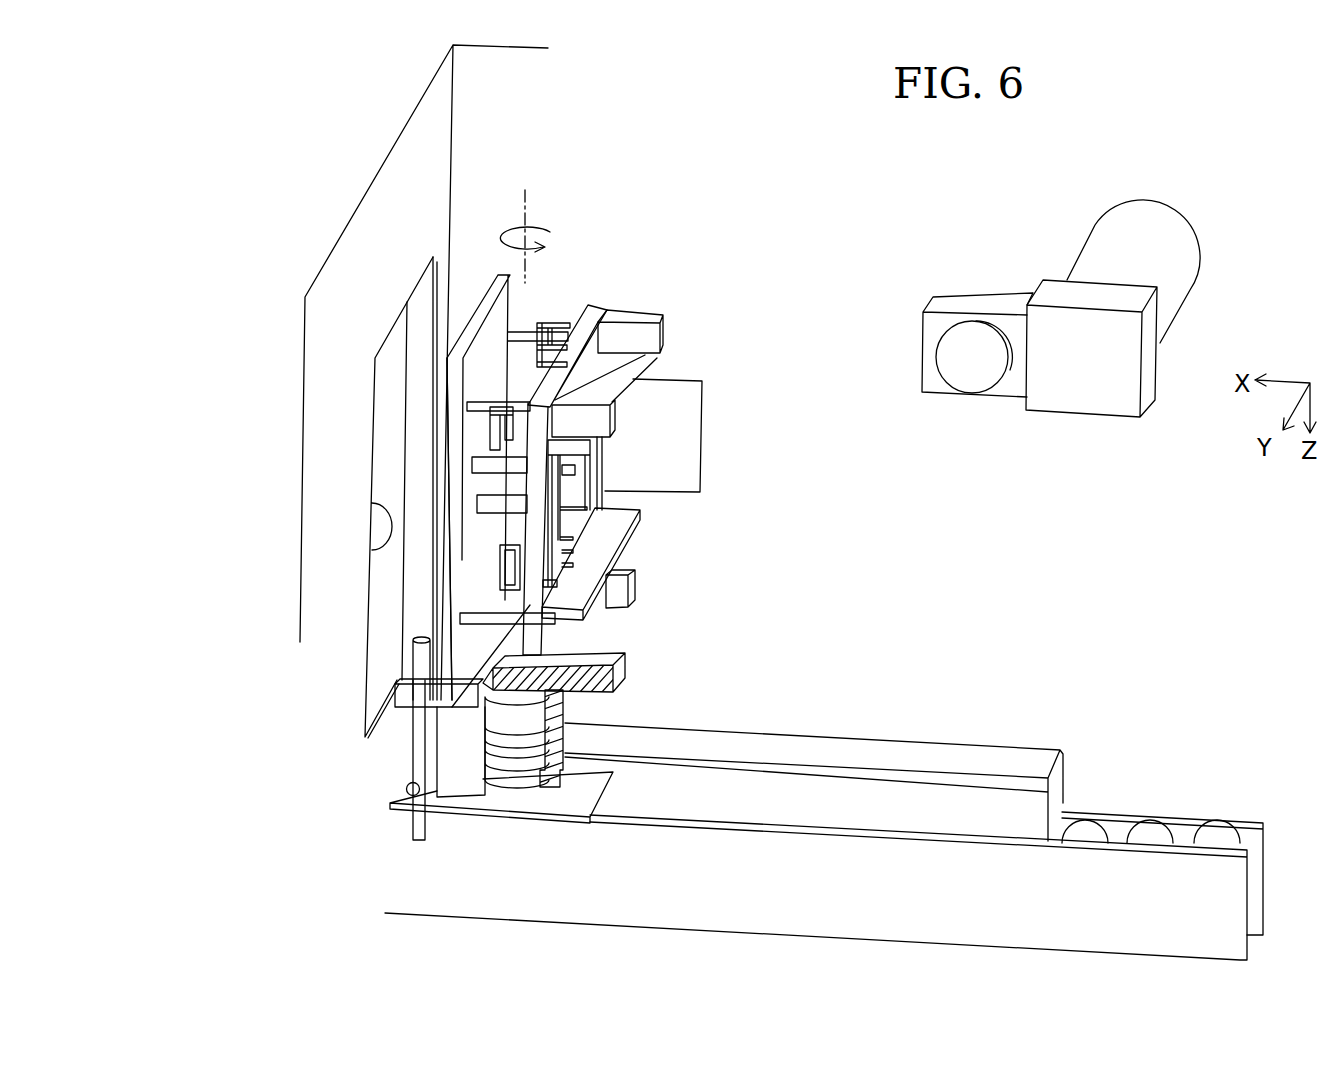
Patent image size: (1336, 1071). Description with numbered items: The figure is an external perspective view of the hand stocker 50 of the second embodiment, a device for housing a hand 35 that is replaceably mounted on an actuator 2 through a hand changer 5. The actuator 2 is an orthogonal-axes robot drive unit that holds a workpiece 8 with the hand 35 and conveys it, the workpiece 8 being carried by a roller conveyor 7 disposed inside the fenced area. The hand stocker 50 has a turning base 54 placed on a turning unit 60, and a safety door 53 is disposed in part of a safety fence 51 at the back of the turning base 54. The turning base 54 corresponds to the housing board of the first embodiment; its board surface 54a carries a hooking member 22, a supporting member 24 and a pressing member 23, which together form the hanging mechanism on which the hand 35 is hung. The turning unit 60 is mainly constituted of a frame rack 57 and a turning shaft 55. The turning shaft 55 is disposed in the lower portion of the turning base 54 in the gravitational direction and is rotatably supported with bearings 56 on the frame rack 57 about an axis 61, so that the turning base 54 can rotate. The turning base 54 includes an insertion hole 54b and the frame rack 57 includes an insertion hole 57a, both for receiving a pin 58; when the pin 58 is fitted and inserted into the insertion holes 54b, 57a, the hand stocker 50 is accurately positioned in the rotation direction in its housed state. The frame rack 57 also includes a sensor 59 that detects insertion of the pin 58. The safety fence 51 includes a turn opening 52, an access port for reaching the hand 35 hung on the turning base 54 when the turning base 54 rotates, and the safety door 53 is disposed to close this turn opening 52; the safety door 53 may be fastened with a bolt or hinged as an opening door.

The actuator 2 is at (1093, 410).
The hand changer 5 is at (968, 340).
The roller conveyor 7 is at (1127, 818).
The workpiece 8 is at (887, 740).
The hooking member 22 is at (485, 463).
The pressing member 23 is at (577, 470).
The supporting member 24 is at (480, 402).
The hand 35 is at (680, 338).
The hand stocker 50 is at (1304, 200).
The safety fence 51 is at (380, 168).
The turn opening 52 is at (370, 549).
The safety door 53 is at (408, 317).
The turning base 54 is at (487, 330).
The board surface 54a is at (467, 307).
The insertion hole 54b is at (413, 690).
The turning shaft 55 is at (513, 746).
The bearings 56 is at (563, 715).
The frame rack 57 is at (520, 800).
The insertion hole 57a is at (403, 810).
The pin 58 is at (420, 647).
The sensor 59 is at (406, 784).
The turning unit 60 is at (650, 660).
The axis 61 is at (527, 200).